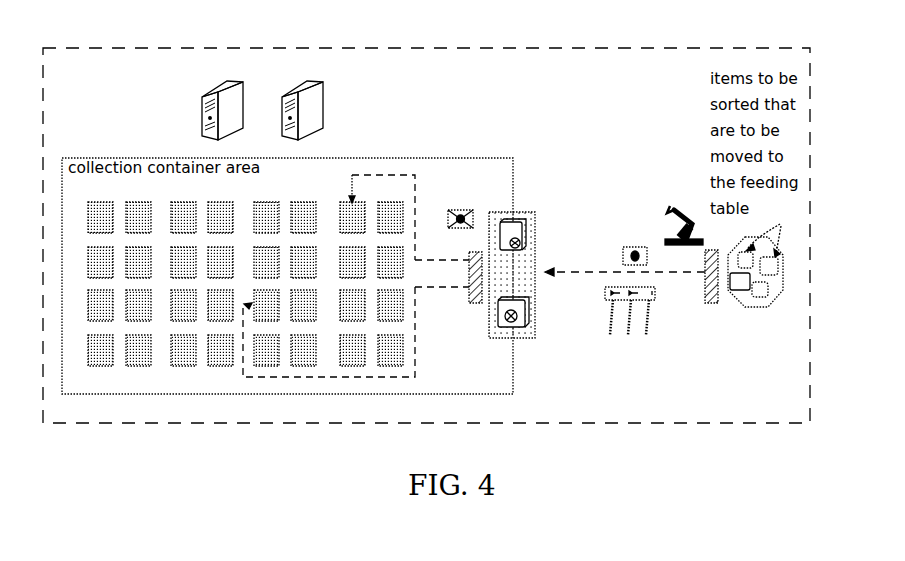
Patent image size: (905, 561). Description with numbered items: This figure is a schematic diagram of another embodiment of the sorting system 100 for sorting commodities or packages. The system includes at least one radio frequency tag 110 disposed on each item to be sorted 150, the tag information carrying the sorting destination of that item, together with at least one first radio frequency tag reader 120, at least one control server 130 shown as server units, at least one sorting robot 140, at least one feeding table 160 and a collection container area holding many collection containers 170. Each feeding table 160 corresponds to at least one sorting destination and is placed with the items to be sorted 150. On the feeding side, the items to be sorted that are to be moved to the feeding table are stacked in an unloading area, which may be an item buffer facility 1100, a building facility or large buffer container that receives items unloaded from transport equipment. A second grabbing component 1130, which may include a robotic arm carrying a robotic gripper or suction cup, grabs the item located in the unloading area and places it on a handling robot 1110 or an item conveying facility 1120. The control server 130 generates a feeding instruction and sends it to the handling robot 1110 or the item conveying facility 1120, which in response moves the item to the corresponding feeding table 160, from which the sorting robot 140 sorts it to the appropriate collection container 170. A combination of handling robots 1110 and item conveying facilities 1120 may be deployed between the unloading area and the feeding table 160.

The sorting system 100 is at (728, 45).
The radio frequency tag 110 is at (520, 243).
The first radio frequency tag reader 120 is at (474, 303).
The control server 130 is at (233, 82).
The sorting robot 140 is at (460, 209).
The item to be sorted 150 is at (524, 226).
The feeding table 160 is at (528, 212).
The collection container 170 is at (220, 203).
The item buffer facility 1100 is at (766, 309).
The handling robot 1110 is at (634, 247).
The item conveying facility 1120 is at (608, 301).
The second grabbing component 1130 is at (688, 204).